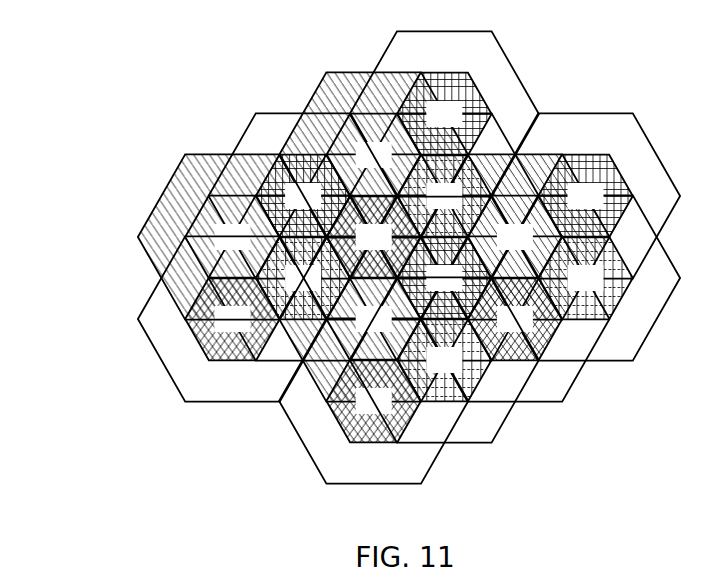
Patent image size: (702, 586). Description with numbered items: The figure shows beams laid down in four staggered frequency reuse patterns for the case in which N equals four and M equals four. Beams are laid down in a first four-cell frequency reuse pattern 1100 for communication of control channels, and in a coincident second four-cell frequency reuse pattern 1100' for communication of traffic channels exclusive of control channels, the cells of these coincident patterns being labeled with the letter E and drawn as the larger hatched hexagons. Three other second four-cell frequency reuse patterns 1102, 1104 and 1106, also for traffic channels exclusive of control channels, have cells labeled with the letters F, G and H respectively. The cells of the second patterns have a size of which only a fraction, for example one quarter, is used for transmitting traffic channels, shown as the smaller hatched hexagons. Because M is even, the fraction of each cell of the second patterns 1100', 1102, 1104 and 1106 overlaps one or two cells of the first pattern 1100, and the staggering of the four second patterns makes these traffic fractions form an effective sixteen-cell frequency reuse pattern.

The first 4-cell frequency reuse pattern 1100 is at (357, 277).
The second 4-cell frequency reuse pattern 1100' is at (204, 231).
The second 4-cell frequency reuse pattern 1102 is at (227, 413).
The second 4-cell frequency reuse pattern 1104 is at (531, 61).
The second 4-cell frequency reuse pattern 1106 is at (508, 442).